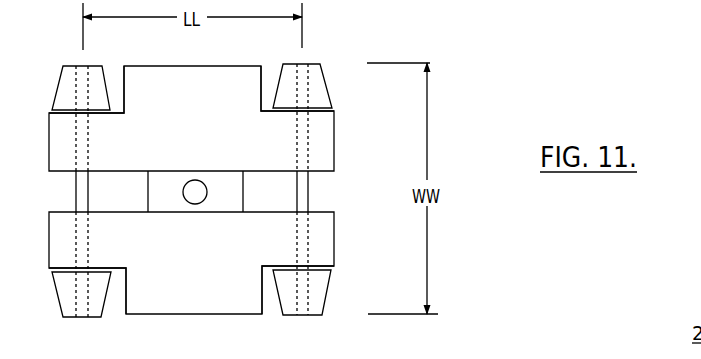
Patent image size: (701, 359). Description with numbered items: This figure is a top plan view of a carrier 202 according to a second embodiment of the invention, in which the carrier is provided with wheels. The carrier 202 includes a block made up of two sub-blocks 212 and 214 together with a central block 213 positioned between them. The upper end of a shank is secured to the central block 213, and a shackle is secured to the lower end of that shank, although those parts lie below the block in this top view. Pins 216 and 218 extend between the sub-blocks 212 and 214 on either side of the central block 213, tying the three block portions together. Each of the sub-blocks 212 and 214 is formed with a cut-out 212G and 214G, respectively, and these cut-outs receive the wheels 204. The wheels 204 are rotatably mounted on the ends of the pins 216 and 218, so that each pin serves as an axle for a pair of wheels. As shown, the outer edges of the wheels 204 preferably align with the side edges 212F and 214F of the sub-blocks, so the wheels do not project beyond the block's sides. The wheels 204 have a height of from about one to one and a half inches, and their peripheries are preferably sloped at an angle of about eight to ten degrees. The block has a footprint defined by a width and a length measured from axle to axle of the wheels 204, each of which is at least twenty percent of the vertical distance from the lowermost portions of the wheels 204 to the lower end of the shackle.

The carrier 202 is at (458, 94).
The wheels 204 is at (328, 92).
The sub-block 212 is at (210, 119).
The side edge 212F is at (227, 66).
The cut-out 212G is at (118, 108).
The central block 213 is at (225, 180).
The sub-block 214 is at (212, 258).
The side edge 214F is at (237, 314).
The cut-out 214G is at (125, 275).
The pin 216 is at (81, 200).
The pin 218 is at (309, 190).